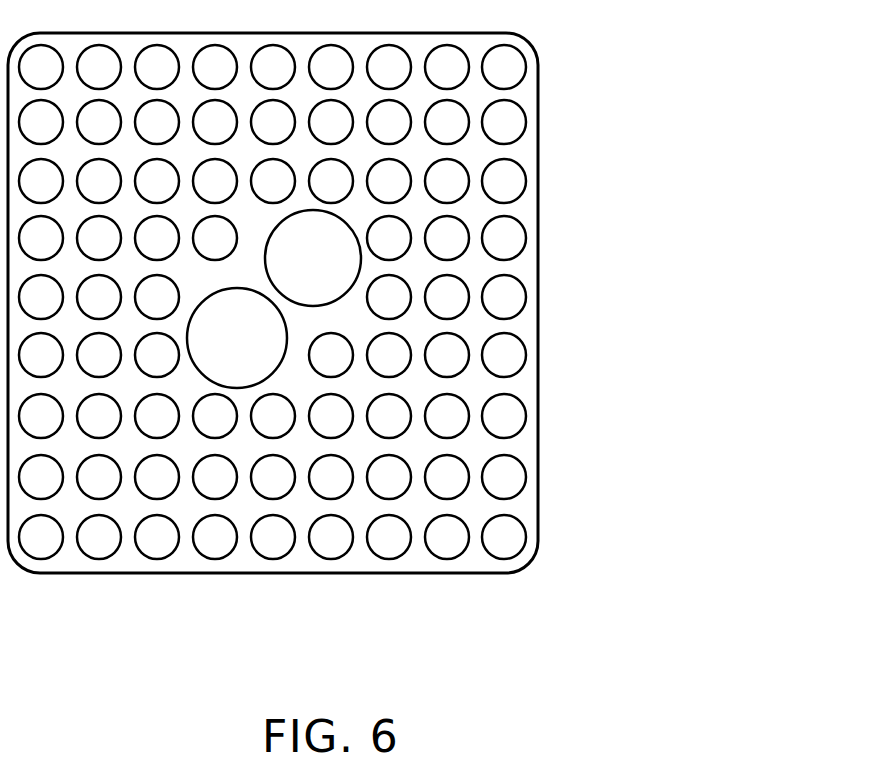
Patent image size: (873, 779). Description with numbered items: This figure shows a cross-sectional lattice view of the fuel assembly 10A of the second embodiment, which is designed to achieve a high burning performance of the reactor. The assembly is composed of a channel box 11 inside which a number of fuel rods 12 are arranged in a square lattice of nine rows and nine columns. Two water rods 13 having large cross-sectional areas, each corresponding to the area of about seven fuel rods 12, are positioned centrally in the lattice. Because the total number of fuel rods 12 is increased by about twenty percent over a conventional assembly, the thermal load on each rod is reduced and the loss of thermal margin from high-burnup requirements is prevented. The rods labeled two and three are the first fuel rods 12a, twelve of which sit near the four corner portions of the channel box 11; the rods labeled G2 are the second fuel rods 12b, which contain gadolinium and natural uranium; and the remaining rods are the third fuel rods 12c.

The fuel assembly 10A is at (387, 367).
The channel box 11 is at (538, 186).
The fuel rods 12 is at (498, 648).
The first fuel rods 12a is at (498, 553).
The second fuel rods 12b is at (285, 437).
The third fuel rods 12c is at (172, 496).
The water rods 13 is at (361, 262).